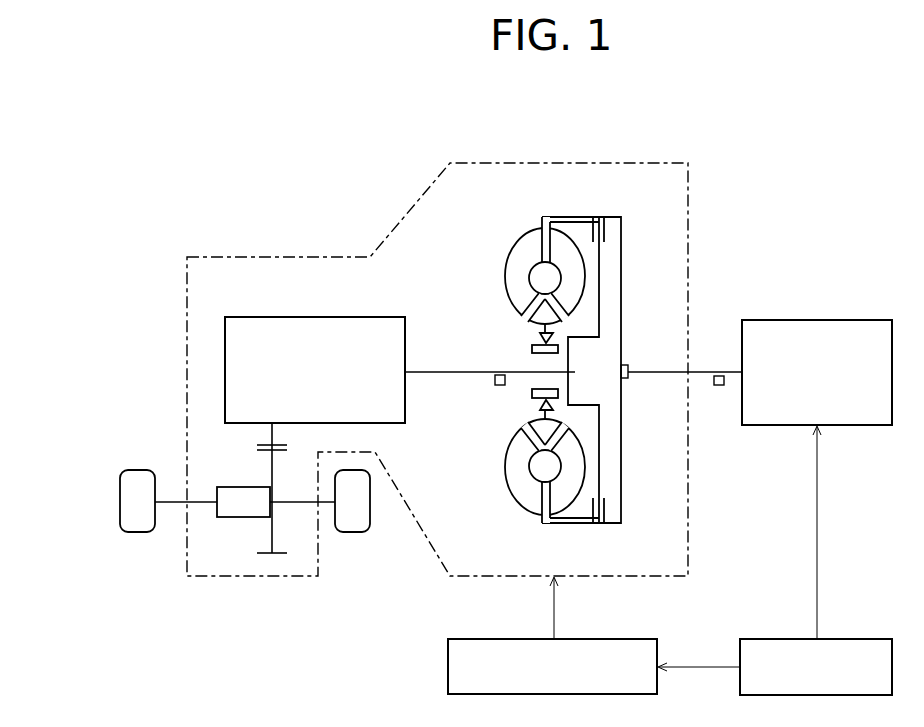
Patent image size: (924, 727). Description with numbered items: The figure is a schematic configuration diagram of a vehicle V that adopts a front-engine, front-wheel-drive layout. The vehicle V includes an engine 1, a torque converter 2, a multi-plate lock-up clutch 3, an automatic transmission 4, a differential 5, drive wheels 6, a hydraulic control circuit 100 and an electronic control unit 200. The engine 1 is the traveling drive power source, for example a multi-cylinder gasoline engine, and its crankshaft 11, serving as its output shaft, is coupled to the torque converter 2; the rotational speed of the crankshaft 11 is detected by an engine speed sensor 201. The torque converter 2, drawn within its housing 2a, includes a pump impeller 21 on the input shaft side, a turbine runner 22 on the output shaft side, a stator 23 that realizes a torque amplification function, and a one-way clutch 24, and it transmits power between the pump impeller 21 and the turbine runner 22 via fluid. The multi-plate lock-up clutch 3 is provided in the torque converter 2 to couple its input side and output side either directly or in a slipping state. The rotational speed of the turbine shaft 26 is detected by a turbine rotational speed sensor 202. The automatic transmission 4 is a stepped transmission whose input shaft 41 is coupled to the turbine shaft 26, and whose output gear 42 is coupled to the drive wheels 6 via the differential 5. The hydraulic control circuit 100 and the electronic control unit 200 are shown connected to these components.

The engine 1 is at (790, 320).
The crankshaft 11 is at (720, 368).
The torque converter 2 is at (560, 350).
The housing of torque converter 2a is at (622, 263).
The pump impeller 21 is at (520, 252).
The turbine runner 22 is at (563, 237).
The stator 23 is at (537, 320).
The one-way clutch 24 is at (532, 347).
The turbine shaft 26 is at (523, 373).
The multi-plate lock-up clutch 3 is at (608, 230).
The automatic transmission 4 is at (338, 317).
The input shaft 41 is at (453, 370).
The output gear 42 is at (258, 433).
The differential 5 is at (237, 522).
The drive wheels 6 is at (135, 533).
The hydraulic control circuit 100 is at (505, 638).
The electronic control unit 200 is at (780, 638).
The engine speed sensor 201 is at (719, 386).
The turbine rotational speed sensor 202 is at (493, 382).
The vehicle V is at (284, 177).